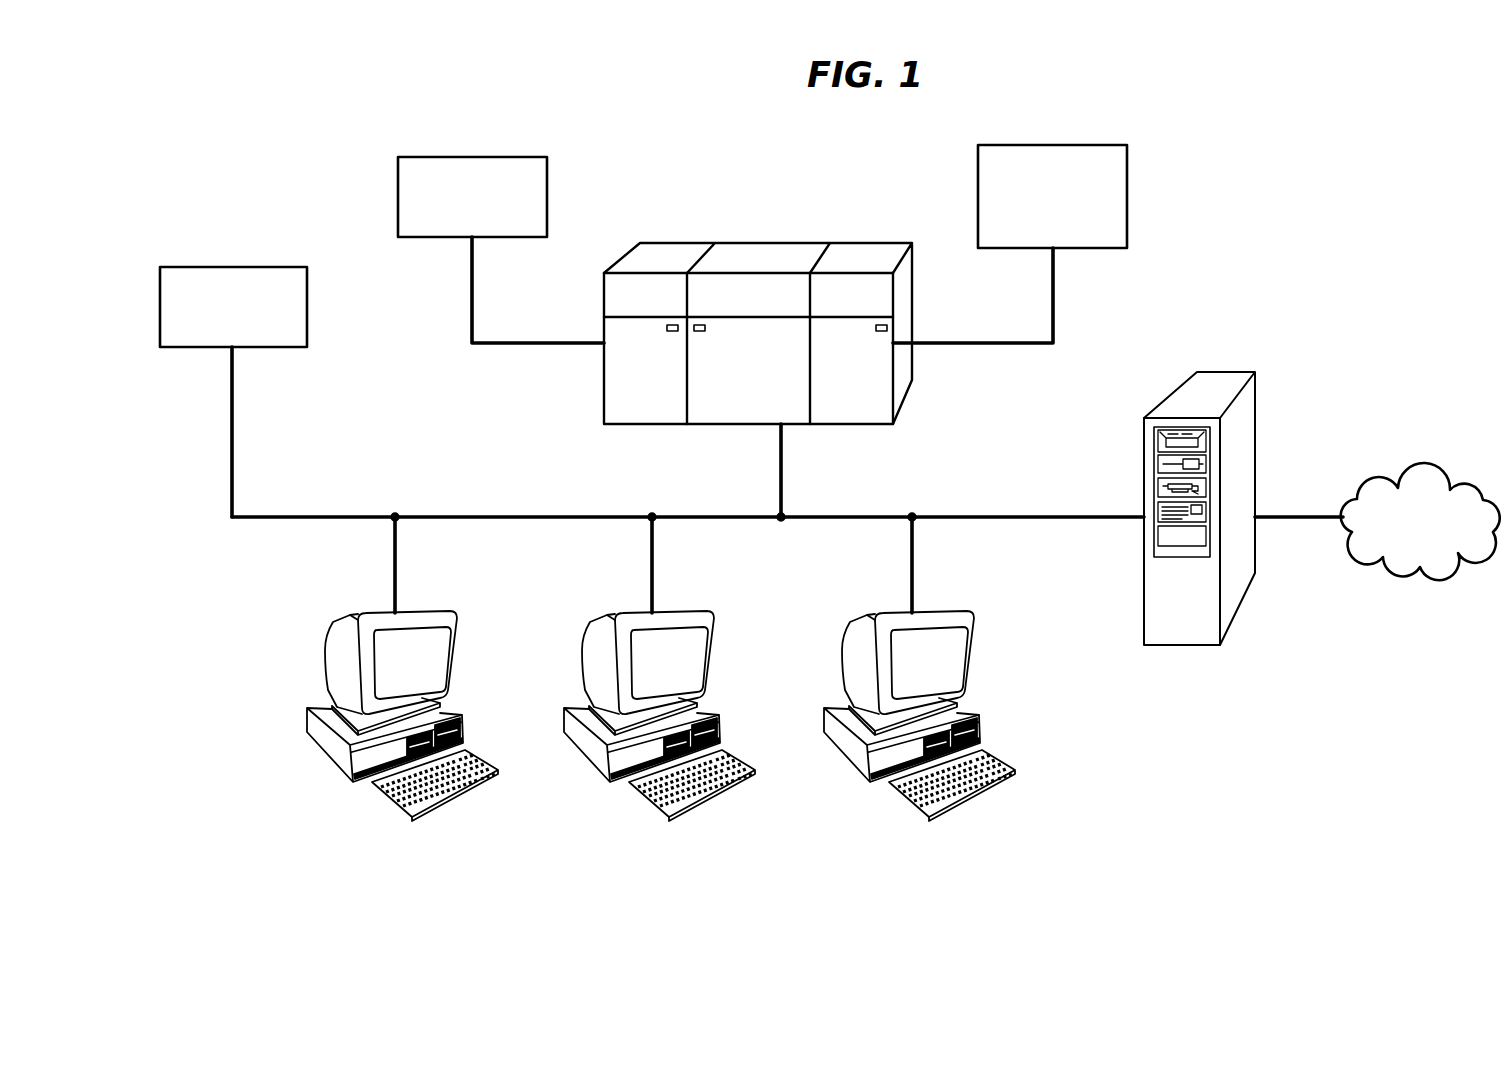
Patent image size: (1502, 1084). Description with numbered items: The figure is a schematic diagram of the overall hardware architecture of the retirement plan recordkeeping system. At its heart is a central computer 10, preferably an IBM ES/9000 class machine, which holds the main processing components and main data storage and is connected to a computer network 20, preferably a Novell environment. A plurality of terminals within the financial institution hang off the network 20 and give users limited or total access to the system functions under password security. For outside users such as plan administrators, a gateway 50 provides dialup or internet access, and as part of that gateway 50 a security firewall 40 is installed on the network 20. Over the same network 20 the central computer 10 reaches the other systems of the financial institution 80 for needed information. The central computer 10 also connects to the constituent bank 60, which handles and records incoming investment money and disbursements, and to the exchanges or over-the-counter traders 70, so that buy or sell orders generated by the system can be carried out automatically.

The central computer 10 is at (786, 257).
The computer network 20 is at (847, 516).
The security firewall 40 is at (1217, 370).
The gateway 50 is at (1418, 472).
The constituent bank 60 is at (1127, 173).
The exchanges or over-the-counter traders 70 is at (548, 188).
The other systems of the financial institution 80 is at (307, 298).